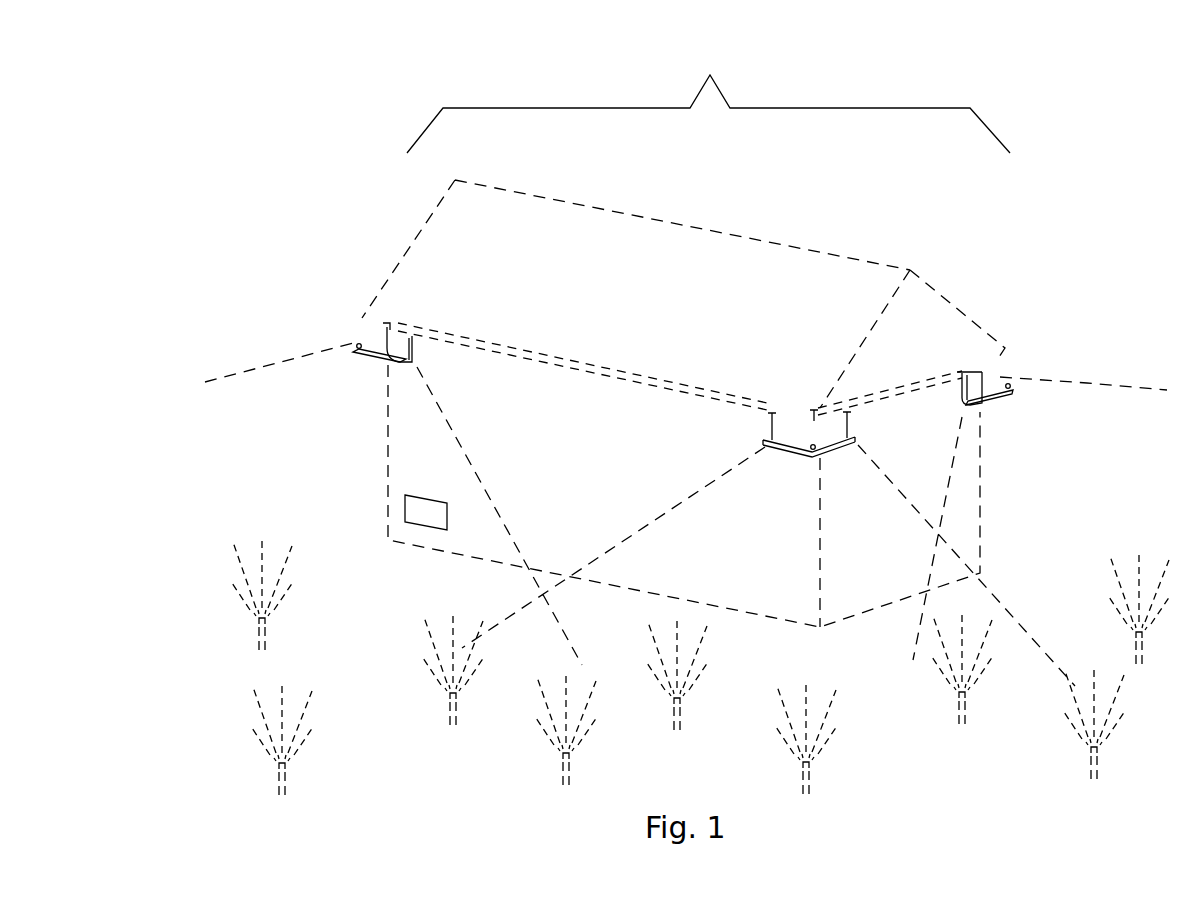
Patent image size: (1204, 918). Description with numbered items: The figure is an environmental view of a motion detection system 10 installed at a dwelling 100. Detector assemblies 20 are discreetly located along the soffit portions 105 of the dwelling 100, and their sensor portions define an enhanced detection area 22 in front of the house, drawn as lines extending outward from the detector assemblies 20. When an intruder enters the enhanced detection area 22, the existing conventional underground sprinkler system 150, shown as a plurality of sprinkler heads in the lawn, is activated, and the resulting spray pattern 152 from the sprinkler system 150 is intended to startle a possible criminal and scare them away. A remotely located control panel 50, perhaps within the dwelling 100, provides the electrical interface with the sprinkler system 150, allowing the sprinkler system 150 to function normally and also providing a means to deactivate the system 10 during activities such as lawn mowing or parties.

The motion detection system 10 is at (226, 162).
The dwelling 100 is at (745, 238).
The soffit portions 105 is at (393, 330).
The detector assemblies 20 is at (390, 345).
The enhanced detection area 22 is at (448, 428).
The control panel 50 is at (413, 506).
The sprinkler system 150 is at (563, 768).
The spray pattern 152 is at (283, 700).